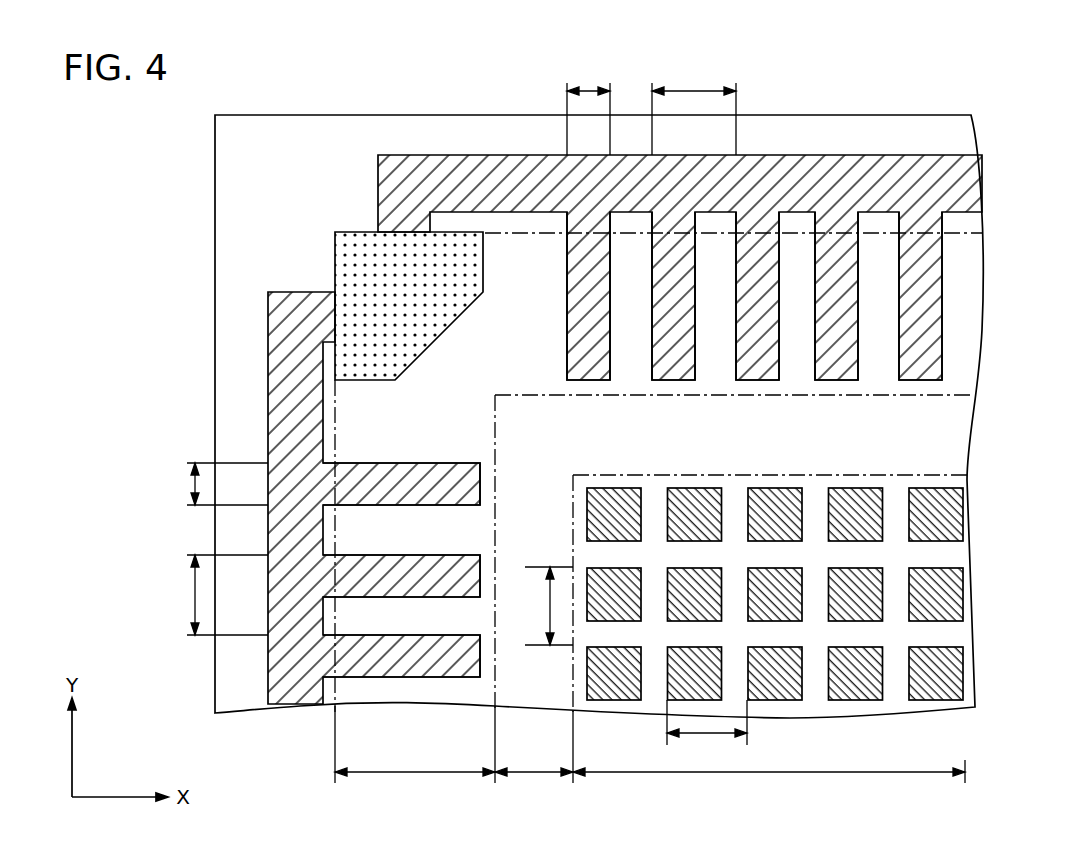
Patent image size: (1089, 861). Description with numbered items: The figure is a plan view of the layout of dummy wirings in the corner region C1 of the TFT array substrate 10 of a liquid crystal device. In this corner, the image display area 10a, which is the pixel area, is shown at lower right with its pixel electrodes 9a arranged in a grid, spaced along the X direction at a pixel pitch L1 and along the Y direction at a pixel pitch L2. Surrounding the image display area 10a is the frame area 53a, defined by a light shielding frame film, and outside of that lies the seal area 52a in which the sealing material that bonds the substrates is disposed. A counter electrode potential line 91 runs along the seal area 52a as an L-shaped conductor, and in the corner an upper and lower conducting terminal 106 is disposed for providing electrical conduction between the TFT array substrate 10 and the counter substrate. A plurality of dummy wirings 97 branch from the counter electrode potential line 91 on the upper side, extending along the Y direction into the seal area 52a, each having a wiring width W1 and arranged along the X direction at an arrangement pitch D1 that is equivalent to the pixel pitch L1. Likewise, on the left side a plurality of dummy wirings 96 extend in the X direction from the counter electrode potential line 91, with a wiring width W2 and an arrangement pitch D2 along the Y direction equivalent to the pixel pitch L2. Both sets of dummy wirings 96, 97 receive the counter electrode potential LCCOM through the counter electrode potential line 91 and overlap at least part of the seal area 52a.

The TFT array substrate 10 is at (502, 115).
The counter electrode potential line 91 is at (797, 175).
The dummy wirings 97 is at (912, 288).
The dummy wirings 96 is at (410, 660).
The upper and lower conducting terminal 106 is at (432, 327).
The seal area 52a is at (965, 310).
The frame area 53a is at (952, 433).
The image display area 10a is at (955, 633).
The pixel electrodes 9a is at (790, 693).
The region C1 is at (1037, 123).
The wiring width W1 is at (588, 108).
The arrangement pitch D1 is at (694, 108).
The wiring width W2 is at (211, 484).
The arrangement pitch D2 is at (212, 595).
The pixel pitch L1 is at (707, 731).
The pixel pitch L2 is at (543, 606).